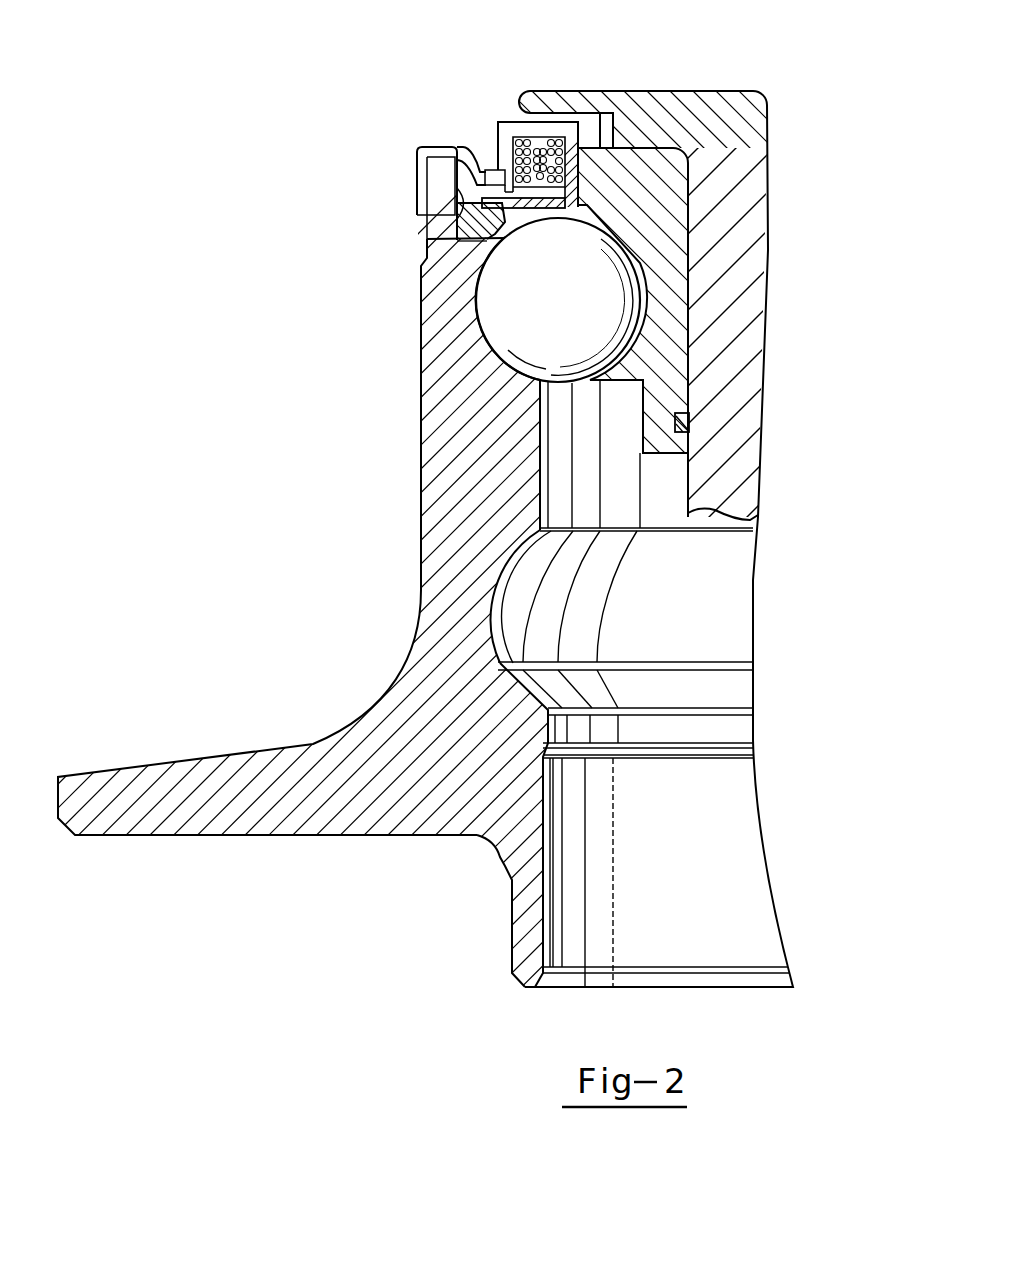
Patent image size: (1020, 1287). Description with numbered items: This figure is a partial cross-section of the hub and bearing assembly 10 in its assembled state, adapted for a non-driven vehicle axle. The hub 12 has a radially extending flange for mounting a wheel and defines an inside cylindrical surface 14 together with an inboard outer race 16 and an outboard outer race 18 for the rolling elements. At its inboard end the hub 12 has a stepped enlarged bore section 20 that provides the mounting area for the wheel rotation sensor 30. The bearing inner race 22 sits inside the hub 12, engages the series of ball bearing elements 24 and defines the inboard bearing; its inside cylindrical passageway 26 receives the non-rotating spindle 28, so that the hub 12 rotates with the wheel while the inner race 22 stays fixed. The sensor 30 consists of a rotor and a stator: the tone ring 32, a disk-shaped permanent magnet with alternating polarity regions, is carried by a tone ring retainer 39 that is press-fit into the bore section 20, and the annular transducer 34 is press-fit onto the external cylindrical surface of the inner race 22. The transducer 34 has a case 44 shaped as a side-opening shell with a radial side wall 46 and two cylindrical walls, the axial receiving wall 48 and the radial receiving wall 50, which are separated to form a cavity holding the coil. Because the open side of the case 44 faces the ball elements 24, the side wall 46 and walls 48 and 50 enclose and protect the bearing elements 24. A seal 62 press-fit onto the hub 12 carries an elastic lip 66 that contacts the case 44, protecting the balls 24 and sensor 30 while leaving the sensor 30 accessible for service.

The hub and bearing assembly 10 is at (318, 405).
The hub 12 is at (160, 766).
The inside cylindrical surface 14 is at (543, 500).
The inboard outer race 16 is at (472, 286).
The outboard outer race 18 is at (488, 612).
The stepped enlarged bore section 20 is at (462, 228).
The bearing inner race 22 is at (660, 375).
The ball bearing elements 24 is at (522, 316).
The inside cylindrical passageway 26 is at (690, 316).
The spindle 28 is at (768, 207).
The sensor 30 is at (487, 118).
The tone ring 32 is at (482, 263).
The annular transducer 34 is at (500, 124).
The tone ring retainer 39 is at (476, 229).
The case 44 is at (577, 150).
The radial side wall 46 is at (497, 138).
The axial receiving wall 48 is at (478, 163).
The radial receiving wall 50 is at (580, 155).
The seal 62 is at (413, 176).
The elastic lip 66 is at (488, 170).